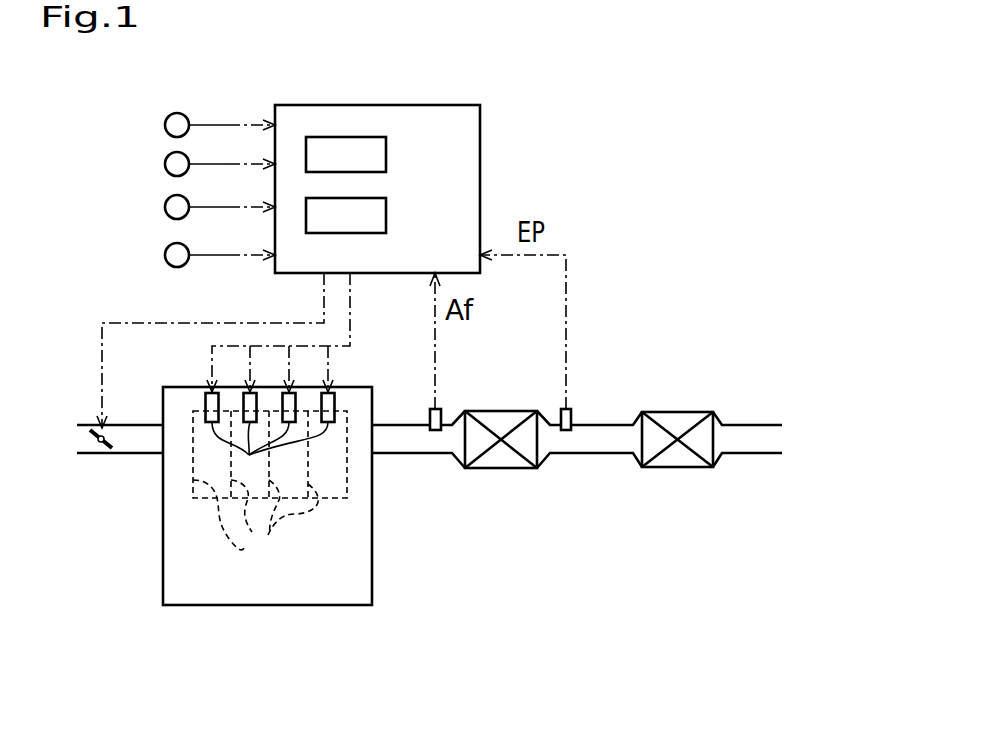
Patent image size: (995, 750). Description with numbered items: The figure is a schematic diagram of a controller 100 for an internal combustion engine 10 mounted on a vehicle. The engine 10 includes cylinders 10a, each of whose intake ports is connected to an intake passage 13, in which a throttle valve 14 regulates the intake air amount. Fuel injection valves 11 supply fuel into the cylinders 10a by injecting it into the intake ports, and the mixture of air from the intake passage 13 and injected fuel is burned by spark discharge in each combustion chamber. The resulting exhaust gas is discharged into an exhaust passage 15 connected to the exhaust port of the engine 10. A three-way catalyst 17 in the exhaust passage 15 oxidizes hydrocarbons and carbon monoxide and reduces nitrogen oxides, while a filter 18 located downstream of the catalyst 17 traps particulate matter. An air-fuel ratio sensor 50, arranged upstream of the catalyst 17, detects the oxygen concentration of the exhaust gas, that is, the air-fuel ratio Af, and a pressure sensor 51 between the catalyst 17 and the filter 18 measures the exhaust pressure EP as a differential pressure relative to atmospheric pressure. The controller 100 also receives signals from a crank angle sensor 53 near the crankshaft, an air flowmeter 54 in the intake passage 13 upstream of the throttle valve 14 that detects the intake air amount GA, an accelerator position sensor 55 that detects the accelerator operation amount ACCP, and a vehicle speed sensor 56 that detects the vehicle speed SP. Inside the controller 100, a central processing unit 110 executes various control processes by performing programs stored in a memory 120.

The internal combustion engine 10 is at (265, 605).
The cylinders 10a is at (270, 489).
The fuel injection valves 11 is at (270, 440).
The intake passage 13 is at (145, 425).
The throttle valve 14 is at (101, 453).
The exhaust passage 15 is at (410, 453).
The catalyst 17 is at (498, 468).
The filter 18 is at (676, 467).
The air-fuel ratio sensor 50 is at (428, 409).
The pressure sensor 51 is at (573, 409).
The crank angle sensor 53 is at (164, 124).
The air flowmeter 54 is at (164, 163).
The accelerator position sensor 55 is at (164, 206).
The vehicle speed sensor 56 is at (164, 254).
The controller 100 is at (480, 135).
The central processing unit 110 is at (386, 152).
The memory 120 is at (386, 214).